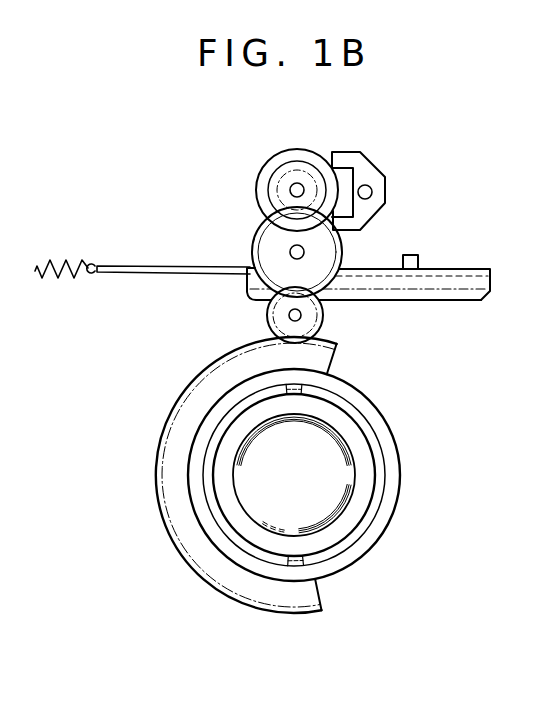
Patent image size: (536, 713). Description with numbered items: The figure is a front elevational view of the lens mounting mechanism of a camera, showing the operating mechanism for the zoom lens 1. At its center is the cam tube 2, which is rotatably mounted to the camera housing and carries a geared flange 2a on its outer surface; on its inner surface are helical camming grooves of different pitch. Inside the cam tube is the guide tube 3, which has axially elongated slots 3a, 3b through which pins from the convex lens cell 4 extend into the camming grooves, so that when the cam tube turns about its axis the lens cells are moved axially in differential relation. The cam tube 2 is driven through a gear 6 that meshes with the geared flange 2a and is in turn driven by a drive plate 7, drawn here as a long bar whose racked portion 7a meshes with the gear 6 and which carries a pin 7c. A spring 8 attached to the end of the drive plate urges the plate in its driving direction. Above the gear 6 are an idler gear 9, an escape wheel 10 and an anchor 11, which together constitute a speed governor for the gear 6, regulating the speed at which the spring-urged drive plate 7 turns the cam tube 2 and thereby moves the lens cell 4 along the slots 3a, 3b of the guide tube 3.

The operating mechanism for the zoom lens 1 is at (315, 496).
The cam tube 2 is at (280, 496).
The geared flange 2a is at (322, 612).
The guide tube 3 is at (309, 476).
The axially elongated slot 3a is at (302, 383).
The axially elongated slot 3b is at (300, 562).
The convex lens cell 4 is at (353, 517).
The gear 6 is at (310, 318).
The drive plate 7 is at (368, 279).
The racked portion 7a is at (427, 300).
The pin 7c is at (410, 255).
The spring 8 is at (57, 258).
The idler gear 9 is at (342, 250).
The escape wheel 10 is at (262, 182).
The anchor 11 is at (373, 173).